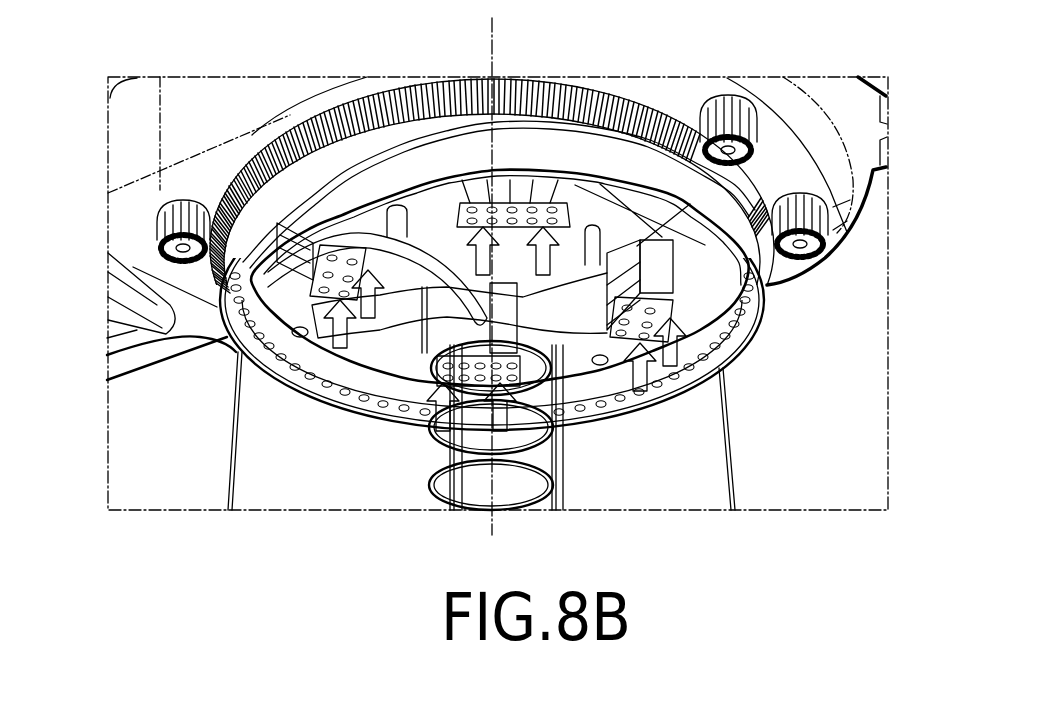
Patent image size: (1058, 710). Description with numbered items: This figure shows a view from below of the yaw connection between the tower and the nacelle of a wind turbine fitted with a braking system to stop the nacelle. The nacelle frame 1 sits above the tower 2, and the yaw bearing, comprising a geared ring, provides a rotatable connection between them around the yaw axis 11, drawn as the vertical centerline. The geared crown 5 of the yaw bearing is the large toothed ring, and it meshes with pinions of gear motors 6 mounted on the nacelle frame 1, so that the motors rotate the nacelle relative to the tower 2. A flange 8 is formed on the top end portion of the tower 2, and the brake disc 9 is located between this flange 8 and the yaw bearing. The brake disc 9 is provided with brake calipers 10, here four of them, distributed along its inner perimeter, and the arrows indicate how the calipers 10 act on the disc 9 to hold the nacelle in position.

The nacelle frame 1 is at (835, 148).
The tower 2 is at (727, 445).
The geared crown 5 is at (296, 125).
The gear motor 6 is at (843, 254).
The flange 8 is at (238, 355).
The brake disc 9 is at (264, 268).
The brake caliper 10 is at (420, 372).
The yaw axis 11 is at (490, 52).